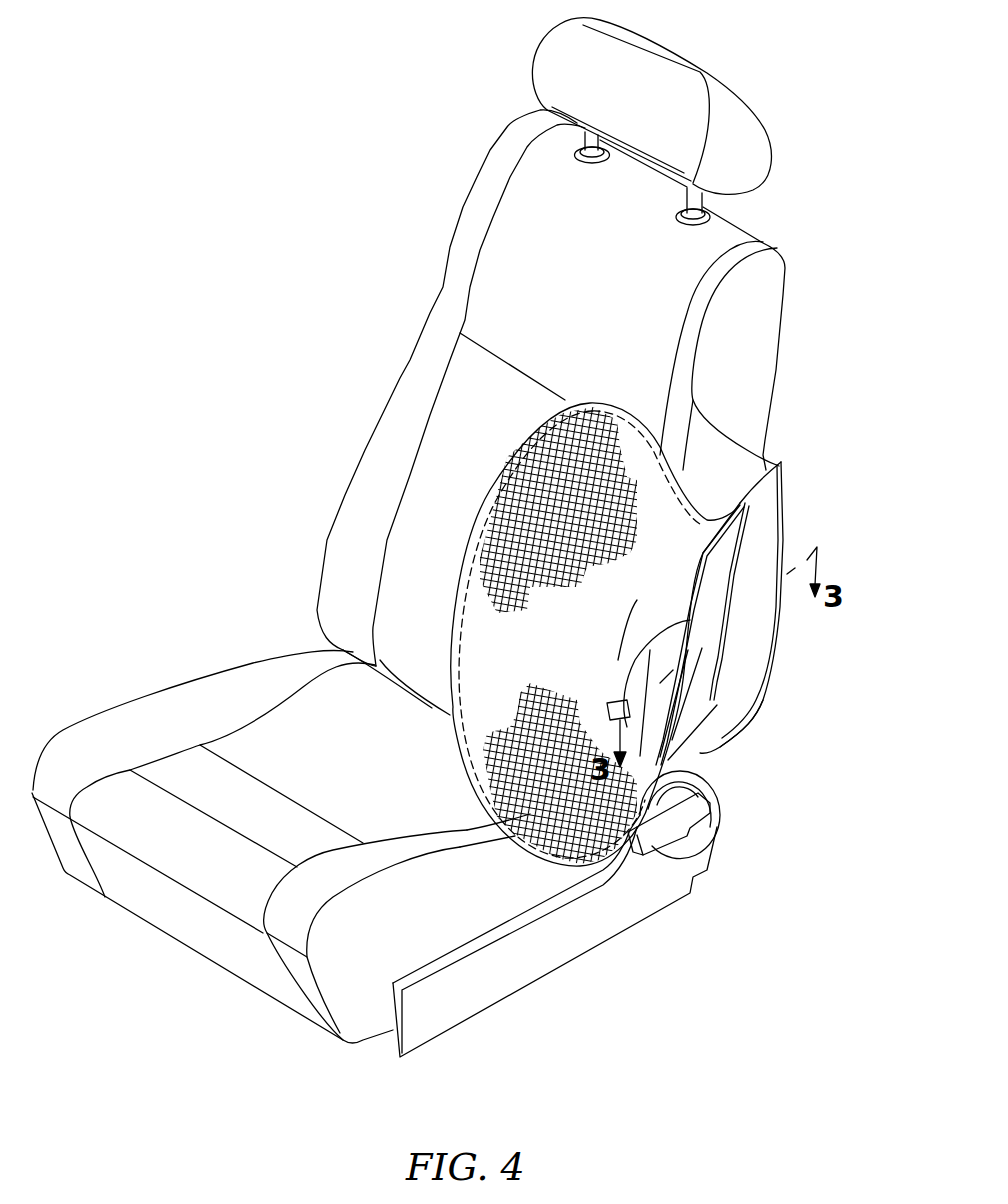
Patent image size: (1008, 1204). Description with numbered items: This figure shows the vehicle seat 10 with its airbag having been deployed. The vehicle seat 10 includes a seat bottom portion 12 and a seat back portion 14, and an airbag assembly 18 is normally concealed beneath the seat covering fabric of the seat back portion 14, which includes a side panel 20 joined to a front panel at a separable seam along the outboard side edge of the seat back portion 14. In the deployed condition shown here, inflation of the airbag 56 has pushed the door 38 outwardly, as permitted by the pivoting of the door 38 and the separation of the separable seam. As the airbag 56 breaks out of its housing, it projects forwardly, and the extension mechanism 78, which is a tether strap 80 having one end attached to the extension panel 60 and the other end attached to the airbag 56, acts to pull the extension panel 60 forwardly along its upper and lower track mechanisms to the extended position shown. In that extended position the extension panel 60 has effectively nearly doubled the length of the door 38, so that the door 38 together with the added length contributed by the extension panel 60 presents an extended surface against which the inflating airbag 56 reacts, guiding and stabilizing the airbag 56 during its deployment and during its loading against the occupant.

The vehicle seat 10 is at (802, 298).
The seat bottom portion 12 is at (160, 720).
The seat back portion 14 is at (397, 415).
The airbag assembly 18 is at (712, 568).
The side panel 20 is at (748, 481).
The door 38 is at (707, 647).
The airbag 56 is at (482, 643).
The extension panel 60 is at (663, 673).
The extension mechanism 78 is at (690, 620).
The tether strap 80 is at (705, 738).